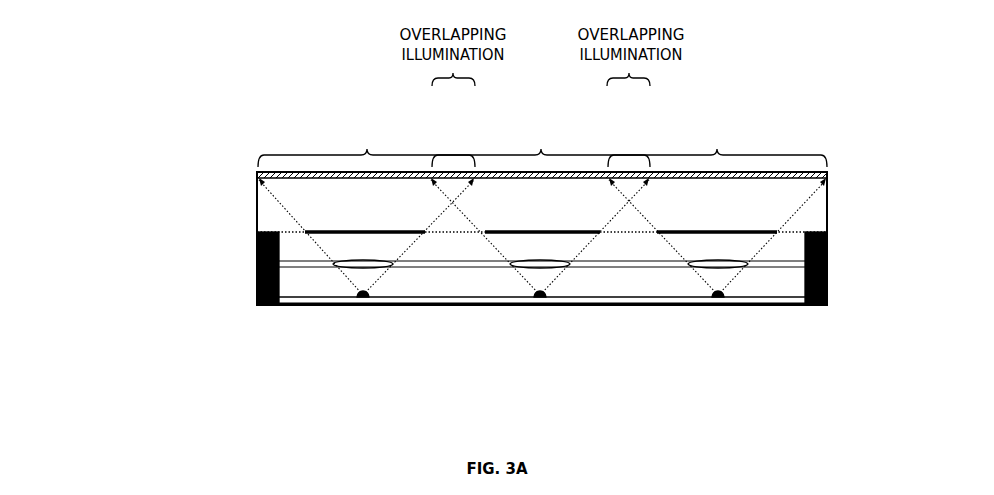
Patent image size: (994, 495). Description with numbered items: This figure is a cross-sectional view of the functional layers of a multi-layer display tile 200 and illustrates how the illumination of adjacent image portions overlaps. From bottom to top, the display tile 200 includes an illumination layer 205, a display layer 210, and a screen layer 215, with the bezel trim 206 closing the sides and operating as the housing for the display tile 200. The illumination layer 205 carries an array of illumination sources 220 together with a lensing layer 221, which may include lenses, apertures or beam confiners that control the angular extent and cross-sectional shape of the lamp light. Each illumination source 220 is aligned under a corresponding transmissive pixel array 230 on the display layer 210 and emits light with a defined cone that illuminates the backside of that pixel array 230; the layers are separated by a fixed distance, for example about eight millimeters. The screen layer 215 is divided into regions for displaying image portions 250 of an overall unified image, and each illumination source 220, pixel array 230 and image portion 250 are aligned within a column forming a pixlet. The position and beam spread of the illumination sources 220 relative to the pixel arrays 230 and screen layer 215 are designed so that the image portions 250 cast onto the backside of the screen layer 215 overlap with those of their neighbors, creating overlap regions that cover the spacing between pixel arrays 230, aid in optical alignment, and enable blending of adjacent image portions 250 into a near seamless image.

The multi-layer display tile 200 is at (258, 93).
The screen layer 215 is at (230, 176).
The display layer 210 is at (249, 183).
The illumination layer 205 is at (249, 235).
The bezel trim 206 is at (826, 306).
The lensing layer 221 is at (313, 268).
The transmissive pixel array 230 is at (368, 231).
The illumination source 220 is at (365, 299).
The image portion 250 is at (542, 135).